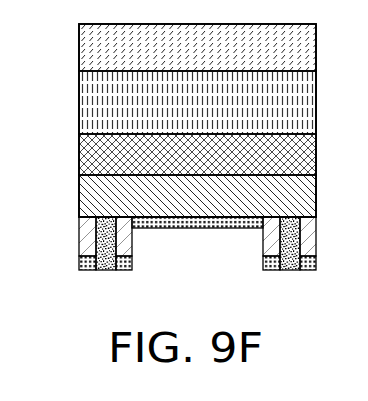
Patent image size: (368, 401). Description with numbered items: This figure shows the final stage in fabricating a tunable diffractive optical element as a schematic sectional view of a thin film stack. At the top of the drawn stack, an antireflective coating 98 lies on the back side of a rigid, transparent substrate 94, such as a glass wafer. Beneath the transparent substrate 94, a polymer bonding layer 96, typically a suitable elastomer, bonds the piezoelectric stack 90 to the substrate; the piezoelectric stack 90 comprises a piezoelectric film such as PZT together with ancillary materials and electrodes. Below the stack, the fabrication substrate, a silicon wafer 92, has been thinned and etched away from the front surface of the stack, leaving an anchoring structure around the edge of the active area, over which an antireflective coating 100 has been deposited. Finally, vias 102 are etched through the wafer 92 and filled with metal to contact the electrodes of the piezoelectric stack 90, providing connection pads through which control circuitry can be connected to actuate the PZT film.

The antireflective coating 98 is at (87, 48).
The transparent substrate 94 is at (87, 105).
The polymer bonding layer 96 is at (87, 152).
The piezoelectric stack 90 is at (87, 187).
The silicon wafer 92 is at (87, 241).
The antireflective coating 100 is at (263, 262).
The vias 102 is at (104, 270).